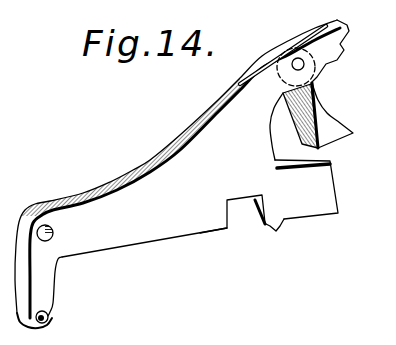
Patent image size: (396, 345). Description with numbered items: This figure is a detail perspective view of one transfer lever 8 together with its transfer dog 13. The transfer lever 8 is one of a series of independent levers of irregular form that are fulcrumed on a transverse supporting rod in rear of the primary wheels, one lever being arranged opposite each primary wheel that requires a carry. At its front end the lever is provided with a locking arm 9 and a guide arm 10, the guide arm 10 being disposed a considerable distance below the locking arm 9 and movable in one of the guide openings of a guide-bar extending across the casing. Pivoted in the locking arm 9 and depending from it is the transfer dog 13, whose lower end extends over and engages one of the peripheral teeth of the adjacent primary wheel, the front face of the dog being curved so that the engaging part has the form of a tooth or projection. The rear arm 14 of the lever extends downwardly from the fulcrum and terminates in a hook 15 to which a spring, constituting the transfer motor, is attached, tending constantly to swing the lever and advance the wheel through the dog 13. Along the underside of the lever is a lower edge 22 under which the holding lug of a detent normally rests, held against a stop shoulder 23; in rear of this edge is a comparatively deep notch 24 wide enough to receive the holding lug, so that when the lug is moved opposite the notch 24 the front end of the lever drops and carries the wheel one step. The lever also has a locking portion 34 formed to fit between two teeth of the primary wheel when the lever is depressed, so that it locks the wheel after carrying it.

The transfer lever 8 is at (176, 169).
The locking arm 9 is at (185, 173).
The guide arm 10 is at (325, 178).
The transfer dog 13 is at (330, 127).
The rear arm 14 is at (55, 275).
The hook 15 is at (48, 320).
The lower edge 22 is at (157, 242).
The stop shoulder 23 is at (277, 231).
The notch 24 is at (239, 197).
The locking portion 34 is at (341, 45).